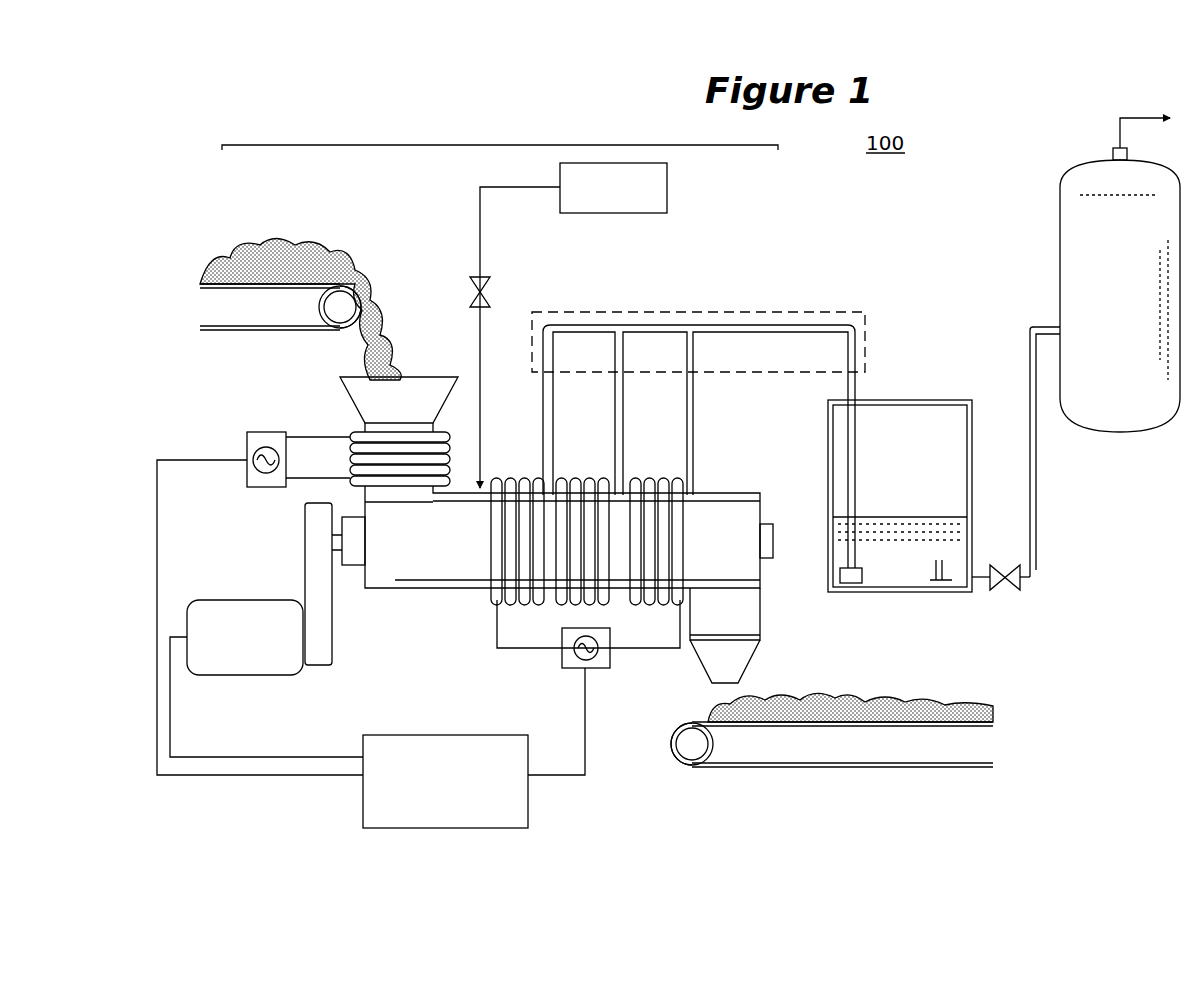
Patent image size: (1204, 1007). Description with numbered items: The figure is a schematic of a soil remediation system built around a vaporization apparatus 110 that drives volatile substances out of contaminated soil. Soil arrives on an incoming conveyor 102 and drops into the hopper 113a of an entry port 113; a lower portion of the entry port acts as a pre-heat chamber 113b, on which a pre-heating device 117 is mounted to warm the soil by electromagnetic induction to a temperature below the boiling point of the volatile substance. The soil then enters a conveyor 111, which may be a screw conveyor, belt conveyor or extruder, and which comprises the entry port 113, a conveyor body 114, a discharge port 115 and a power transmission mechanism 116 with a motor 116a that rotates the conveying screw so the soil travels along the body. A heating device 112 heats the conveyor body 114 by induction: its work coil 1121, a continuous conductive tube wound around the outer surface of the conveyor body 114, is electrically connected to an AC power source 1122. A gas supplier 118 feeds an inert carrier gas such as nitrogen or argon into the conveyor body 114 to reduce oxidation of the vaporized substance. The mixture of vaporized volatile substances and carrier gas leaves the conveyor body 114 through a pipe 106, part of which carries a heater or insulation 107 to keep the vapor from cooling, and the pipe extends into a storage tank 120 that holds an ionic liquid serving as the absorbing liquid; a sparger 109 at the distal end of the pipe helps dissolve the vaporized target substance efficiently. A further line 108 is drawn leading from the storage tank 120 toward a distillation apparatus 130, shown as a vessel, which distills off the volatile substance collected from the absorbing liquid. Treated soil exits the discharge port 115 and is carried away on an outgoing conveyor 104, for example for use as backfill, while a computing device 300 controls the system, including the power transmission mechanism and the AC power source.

The incoming conveyor 102 is at (232, 318).
The outgoing conveyor 104 is at (818, 768).
The pipe 106 is at (752, 325).
The heater or insulation 107 is at (810, 312).
The liquid tank 108 is at (1036, 512).
The sparger 109 is at (852, 583).
The vaporization apparatus 110 is at (500, 145).
The conveyor 111 is at (385, 598).
The heating device 112 is at (566, 605).
The work coil 1121 is at (518, 458).
The AC power source 1122 is at (612, 656).
The entry port 113 is at (433, 376).
The hopper 113a is at (364, 402).
The pre-heat chamber 113b is at (353, 436).
The conveyor body 114 is at (430, 590).
The discharge port 115 is at (764, 616).
The power transmission mechanism 116 is at (298, 540).
The motor 116a is at (250, 600).
The pre-heating device 117 is at (322, 428).
The gas supplier 118 is at (668, 185).
The storage tank 120 is at (936, 306).
The distillation apparatus 130 is at (1145, 116).
The computing device 300 is at (413, 735).